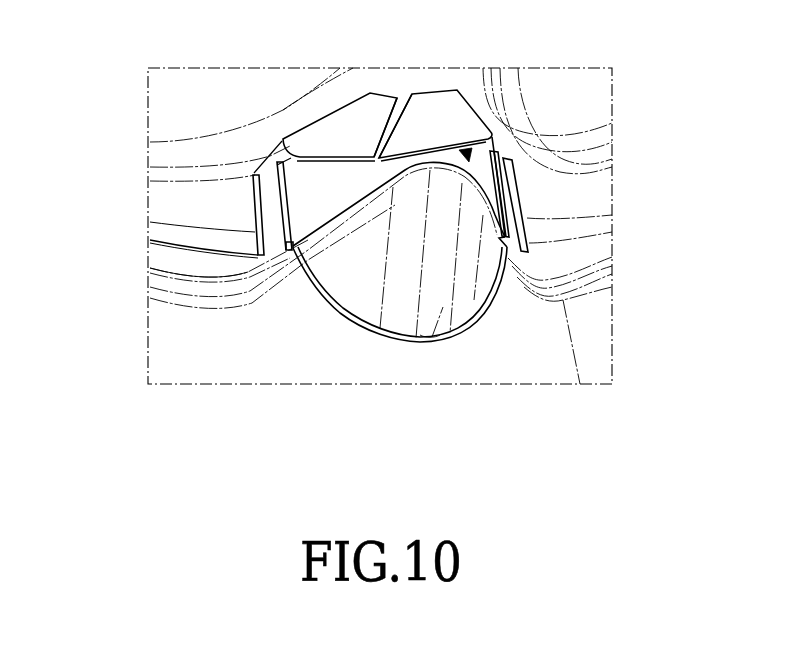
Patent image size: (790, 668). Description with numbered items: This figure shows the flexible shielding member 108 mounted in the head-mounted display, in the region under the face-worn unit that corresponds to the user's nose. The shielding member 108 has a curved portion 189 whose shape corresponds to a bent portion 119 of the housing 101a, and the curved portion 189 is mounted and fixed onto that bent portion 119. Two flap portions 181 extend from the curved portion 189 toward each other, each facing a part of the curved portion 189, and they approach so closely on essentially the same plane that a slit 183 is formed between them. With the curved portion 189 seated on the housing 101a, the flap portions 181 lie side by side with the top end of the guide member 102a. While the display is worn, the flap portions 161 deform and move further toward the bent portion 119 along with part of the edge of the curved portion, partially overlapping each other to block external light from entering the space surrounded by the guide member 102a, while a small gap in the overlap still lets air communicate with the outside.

The housing 101a is at (173, 343).
The guide member 102a is at (173, 210).
The flexible shielding member 108 is at (458, 228).
The bent portion 119 is at (360, 363).
The flap portions 161 is at (433, 112).
The flap portions 181 is at (318, 135).
The slit 183 is at (388, 123).
The curved portion 189 is at (427, 347).